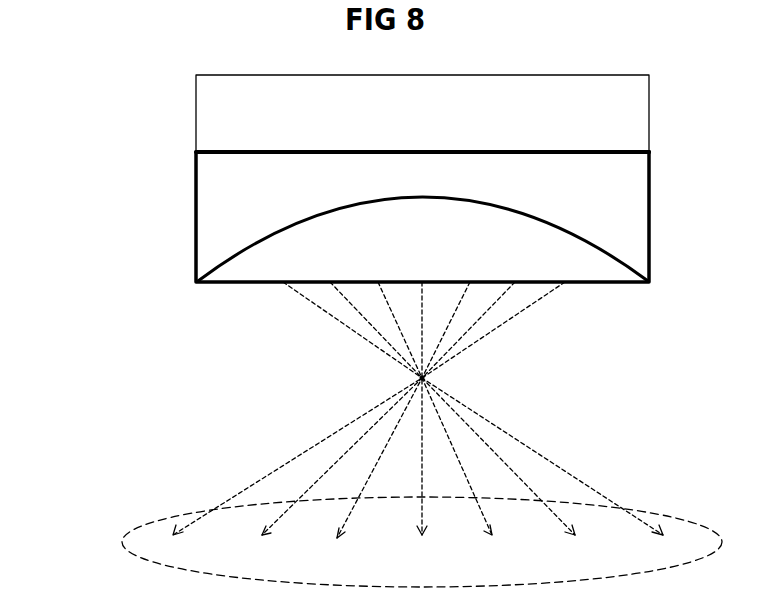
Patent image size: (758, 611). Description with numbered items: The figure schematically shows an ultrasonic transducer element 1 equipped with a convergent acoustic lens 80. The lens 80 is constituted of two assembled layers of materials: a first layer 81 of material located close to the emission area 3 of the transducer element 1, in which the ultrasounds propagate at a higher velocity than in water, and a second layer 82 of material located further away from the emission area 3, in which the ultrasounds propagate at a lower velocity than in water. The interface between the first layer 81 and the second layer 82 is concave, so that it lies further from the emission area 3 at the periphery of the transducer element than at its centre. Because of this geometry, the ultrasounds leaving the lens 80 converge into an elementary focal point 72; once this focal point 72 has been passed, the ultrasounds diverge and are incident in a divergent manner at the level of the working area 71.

The transducer element 1 is at (115, 93).
The emission area 3 is at (626, 157).
The convergent lens 80 is at (104, 234).
The first layer of material 81 is at (222, 164).
The second layer of material 82 is at (198, 283).
The elementary focal point 72 is at (404, 376).
The working area 71 is at (158, 516).